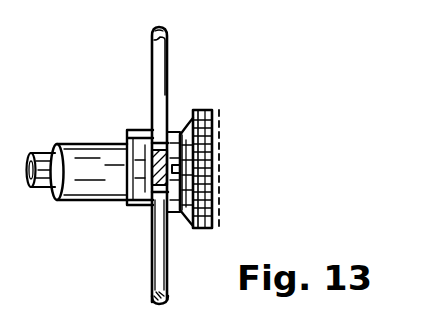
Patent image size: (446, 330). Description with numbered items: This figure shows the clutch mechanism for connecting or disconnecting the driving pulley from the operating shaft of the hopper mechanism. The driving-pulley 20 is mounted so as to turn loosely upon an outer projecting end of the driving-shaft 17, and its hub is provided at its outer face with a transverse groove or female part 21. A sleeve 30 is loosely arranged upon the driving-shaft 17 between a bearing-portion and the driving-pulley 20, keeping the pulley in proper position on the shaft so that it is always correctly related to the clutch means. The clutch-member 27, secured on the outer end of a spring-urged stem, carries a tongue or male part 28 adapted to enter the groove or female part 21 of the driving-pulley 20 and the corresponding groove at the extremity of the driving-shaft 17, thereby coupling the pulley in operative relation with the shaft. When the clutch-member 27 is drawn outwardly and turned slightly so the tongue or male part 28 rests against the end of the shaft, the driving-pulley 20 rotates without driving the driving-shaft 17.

The driving-shaft 17 is at (40, 152).
The sleeve 30 is at (88, 158).
The transverse groove or female part 21 is at (137, 204).
The driving-pulley 20 is at (168, 256).
The tongue or male part 28 is at (177, 169).
The clutch-member 27 is at (200, 110).